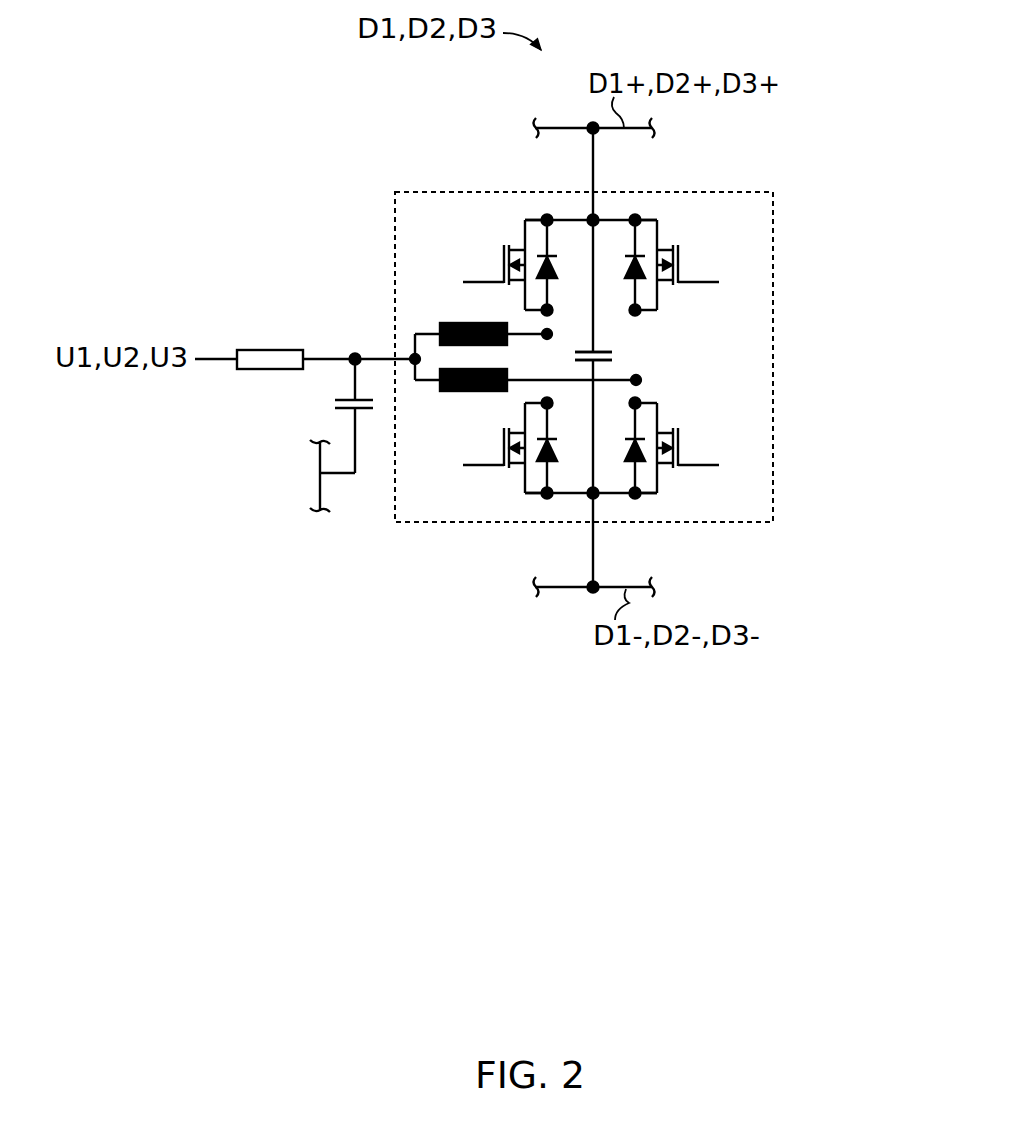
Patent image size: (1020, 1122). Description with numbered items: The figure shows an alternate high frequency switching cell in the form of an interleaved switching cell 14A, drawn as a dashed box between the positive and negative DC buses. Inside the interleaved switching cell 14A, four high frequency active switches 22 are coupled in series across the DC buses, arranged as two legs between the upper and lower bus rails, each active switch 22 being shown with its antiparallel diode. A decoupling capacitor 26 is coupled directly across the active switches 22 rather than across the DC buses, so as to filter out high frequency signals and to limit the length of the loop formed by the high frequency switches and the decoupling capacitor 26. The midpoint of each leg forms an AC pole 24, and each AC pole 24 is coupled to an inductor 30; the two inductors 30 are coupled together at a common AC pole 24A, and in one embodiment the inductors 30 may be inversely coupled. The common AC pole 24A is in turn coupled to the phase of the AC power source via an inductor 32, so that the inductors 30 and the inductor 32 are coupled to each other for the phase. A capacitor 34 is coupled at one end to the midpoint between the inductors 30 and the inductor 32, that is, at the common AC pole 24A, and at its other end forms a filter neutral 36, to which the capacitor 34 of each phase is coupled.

The interleaved switching cell 14A is at (800, 54).
The active switch 22 is at (481, 254).
The AC pole 24 is at (550, 332).
The common AC pole 24A is at (412, 356).
The decoupling capacitor 26 is at (604, 347).
The inductor 30 is at (452, 324).
The inductor 32 is at (270, 349).
The capacitor 34 is at (337, 413).
The filter neutral 36 is at (319, 481).